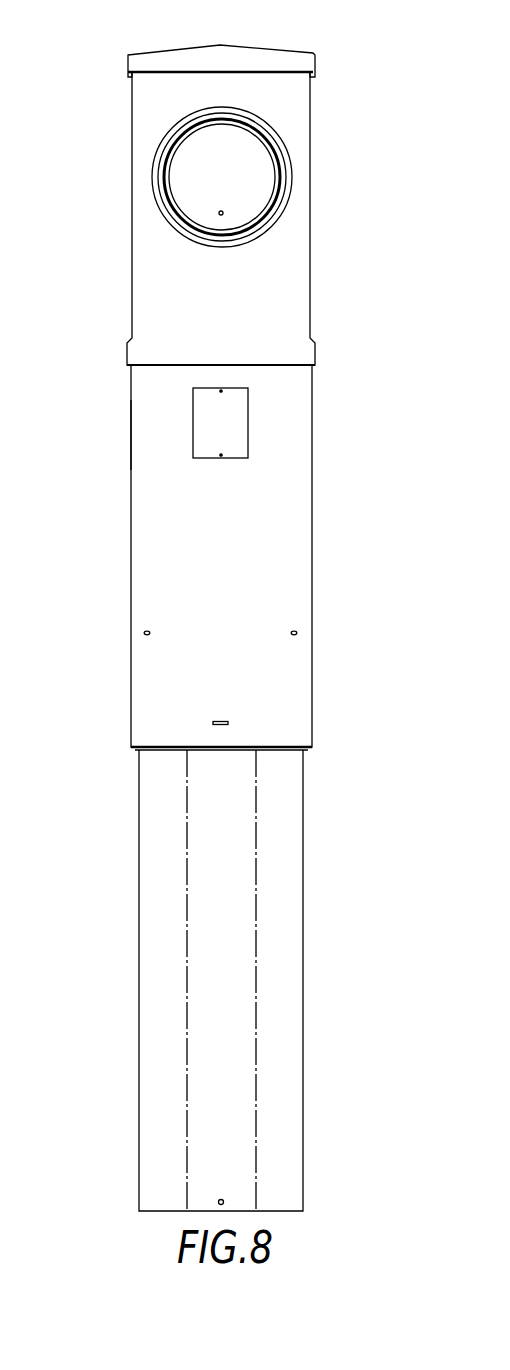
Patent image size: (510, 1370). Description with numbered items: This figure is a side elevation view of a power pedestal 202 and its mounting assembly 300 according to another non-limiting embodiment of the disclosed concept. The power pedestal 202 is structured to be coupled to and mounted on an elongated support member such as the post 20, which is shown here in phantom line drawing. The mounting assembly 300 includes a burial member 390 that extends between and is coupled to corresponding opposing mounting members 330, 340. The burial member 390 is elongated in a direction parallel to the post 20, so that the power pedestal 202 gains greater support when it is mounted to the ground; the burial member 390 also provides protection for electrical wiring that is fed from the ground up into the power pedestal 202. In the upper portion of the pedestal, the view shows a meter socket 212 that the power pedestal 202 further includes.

The power pedestal 202 is at (90, 123).
The mounting assembly 300 is at (166, 200).
The meter socket 212 is at (210, 153).
The mounting member 330 is at (312, 443).
The mounting member 340 is at (131, 434).
The burial member 390 is at (186, 980).
The post 20 is at (256, 862).